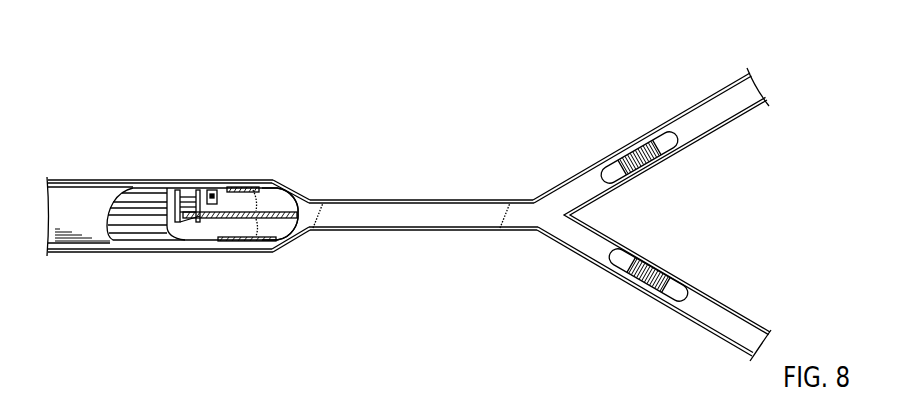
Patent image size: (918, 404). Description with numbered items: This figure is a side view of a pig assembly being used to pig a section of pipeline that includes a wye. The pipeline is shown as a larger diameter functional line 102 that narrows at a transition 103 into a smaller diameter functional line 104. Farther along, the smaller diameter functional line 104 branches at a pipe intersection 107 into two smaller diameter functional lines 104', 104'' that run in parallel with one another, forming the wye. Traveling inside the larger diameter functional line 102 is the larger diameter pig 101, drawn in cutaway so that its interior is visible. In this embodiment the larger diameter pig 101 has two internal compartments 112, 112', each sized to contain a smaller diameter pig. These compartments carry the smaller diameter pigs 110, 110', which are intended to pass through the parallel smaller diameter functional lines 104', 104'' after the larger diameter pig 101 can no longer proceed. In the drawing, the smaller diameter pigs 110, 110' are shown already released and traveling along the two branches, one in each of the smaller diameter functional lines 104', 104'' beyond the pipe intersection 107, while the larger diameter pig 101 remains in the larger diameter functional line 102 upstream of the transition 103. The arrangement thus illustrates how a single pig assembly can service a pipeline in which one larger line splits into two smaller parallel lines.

The larger diameter pig body 101 is at (256, 189).
The larger diameter functional line 102 is at (167, 247).
The transition 103 is at (294, 236).
The smaller diameter functional line 104 is at (423, 235).
The smaller diameter functional line 104' is at (651, 135).
The smaller diameter functional line 104'' is at (654, 294).
The pipe intersection 107 is at (584, 212).
The smaller diameter pig 110 is at (648, 295).
The smaller diameter pig 110' is at (639, 137).
The internal compartment 112 is at (289, 185).
The internal compartment 112' is at (282, 249).